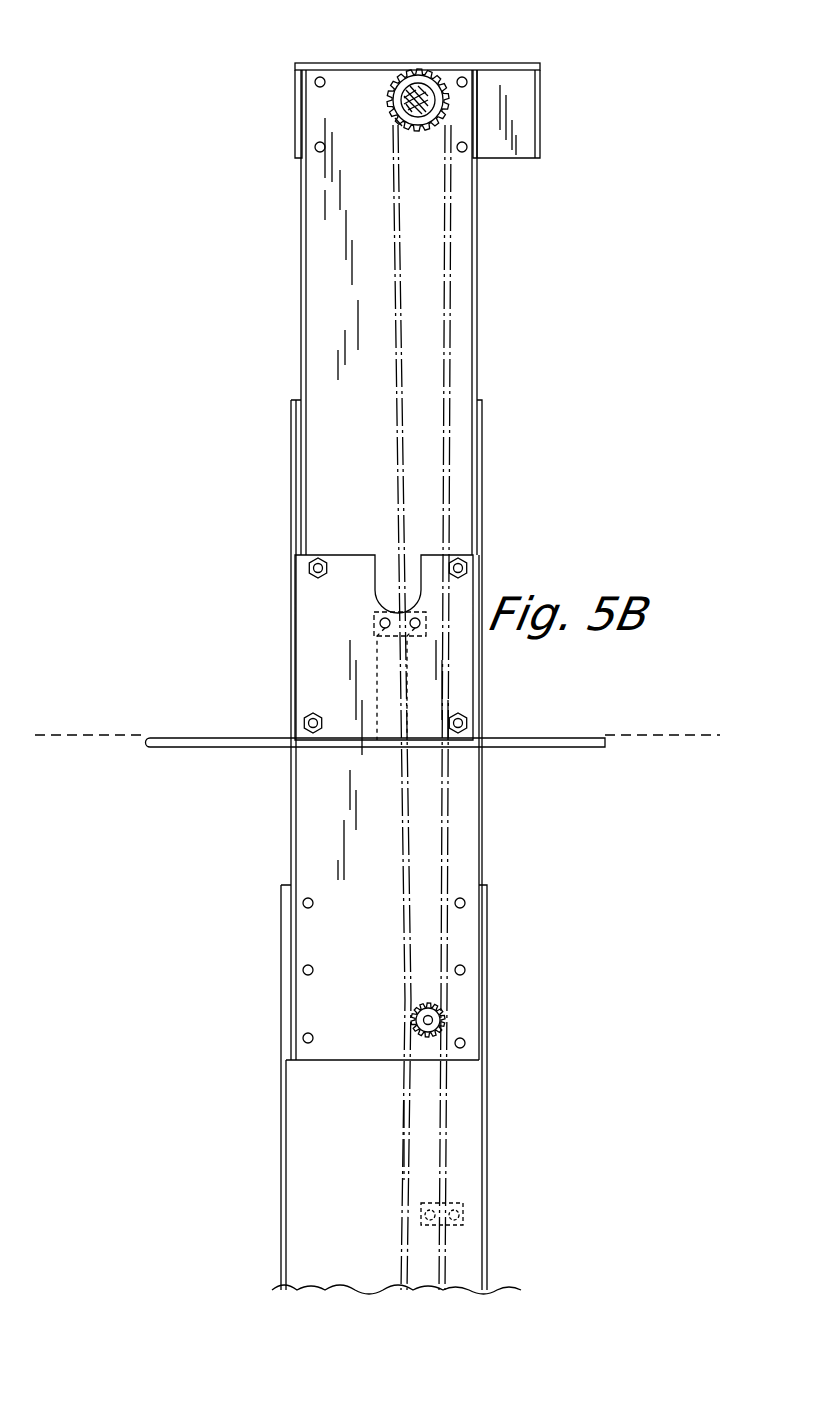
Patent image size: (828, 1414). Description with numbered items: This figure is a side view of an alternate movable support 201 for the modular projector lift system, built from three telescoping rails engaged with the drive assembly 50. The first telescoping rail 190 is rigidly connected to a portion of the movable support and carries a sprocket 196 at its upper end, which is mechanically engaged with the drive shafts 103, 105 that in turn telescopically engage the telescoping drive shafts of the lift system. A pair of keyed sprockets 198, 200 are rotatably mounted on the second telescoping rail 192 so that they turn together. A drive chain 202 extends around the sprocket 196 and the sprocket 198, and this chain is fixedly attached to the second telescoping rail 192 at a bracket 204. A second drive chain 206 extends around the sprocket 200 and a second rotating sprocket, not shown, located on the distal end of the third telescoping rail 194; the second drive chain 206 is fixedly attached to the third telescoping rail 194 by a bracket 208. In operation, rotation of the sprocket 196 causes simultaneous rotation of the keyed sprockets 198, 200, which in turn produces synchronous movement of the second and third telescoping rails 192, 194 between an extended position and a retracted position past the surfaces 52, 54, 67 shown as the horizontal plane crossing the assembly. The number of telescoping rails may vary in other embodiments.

The drive assembly 50 is at (540, 63).
The surface 52 is at (377, 774).
The surface 54 is at (377, 774).
The surface 67 is at (152, 748).
The drive shaft 103 is at (461, 70).
The drive shaft 105 is at (425, 78).
The first telescoping rail 190 is at (478, 252).
The second telescoping rail 192 is at (481, 615).
The third telescoping rail 194 is at (484, 1085).
The sprocket 196 is at (400, 128).
The keyed sprocket 198 is at (509, 998).
The keyed sprocket 200 is at (430, 1012).
The movable support 201 is at (483, 427).
The drive chain 202 is at (452, 326).
The bracket 204 is at (378, 625).
The second drive chain 206 is at (446, 1148).
The bracket 208 is at (462, 1206).